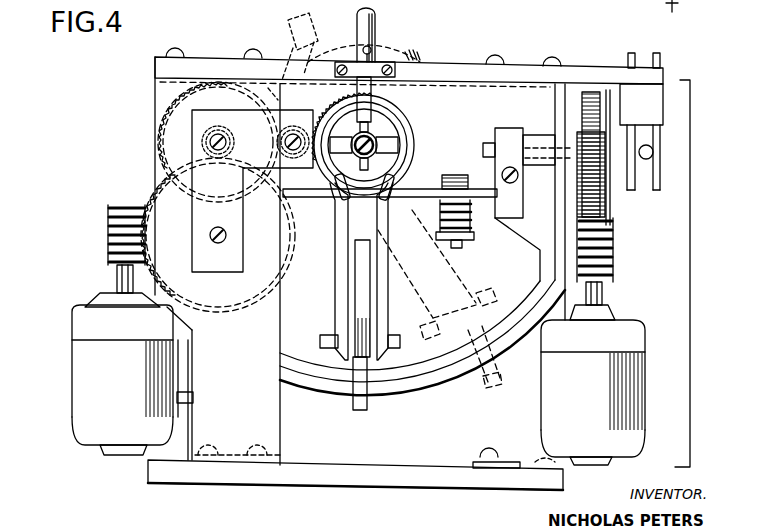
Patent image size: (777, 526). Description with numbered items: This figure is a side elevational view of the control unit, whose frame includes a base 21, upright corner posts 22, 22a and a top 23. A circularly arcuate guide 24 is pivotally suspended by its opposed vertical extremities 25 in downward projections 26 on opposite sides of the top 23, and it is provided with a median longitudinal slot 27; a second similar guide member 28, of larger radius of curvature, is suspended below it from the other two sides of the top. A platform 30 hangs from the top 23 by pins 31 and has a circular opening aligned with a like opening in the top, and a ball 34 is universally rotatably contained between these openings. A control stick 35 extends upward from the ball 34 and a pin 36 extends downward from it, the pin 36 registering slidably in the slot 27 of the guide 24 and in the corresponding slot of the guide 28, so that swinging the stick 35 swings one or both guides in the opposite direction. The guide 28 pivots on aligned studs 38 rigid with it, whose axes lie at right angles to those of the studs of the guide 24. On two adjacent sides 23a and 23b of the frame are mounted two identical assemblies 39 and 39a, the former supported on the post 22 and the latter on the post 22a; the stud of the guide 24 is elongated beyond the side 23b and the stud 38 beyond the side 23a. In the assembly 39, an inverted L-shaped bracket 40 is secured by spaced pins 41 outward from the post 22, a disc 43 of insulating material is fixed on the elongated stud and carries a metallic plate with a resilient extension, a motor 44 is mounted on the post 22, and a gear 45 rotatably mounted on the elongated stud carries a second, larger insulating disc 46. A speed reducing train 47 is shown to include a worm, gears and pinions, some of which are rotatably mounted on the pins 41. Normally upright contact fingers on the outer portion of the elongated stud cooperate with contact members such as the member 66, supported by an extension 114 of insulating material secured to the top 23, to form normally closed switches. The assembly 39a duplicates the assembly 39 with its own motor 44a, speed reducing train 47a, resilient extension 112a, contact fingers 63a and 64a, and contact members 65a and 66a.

The base 21 is at (320, 481).
The corner post 22 is at (270, 430).
The corner post 22a is at (578, 292).
The top 23 is at (155, 70).
The side of frame 23a is at (568, 489).
The side of frame 23b is at (415, 481).
The circularly arcuate guide 24 is at (335, 307).
The opposed vertical extremities 25 is at (512, 137).
The downward projections 26 is at (407, 86).
The median longitudinal slot 27 is at (367, 327).
The second guide member 28 is at (448, 378).
The platform 30 is at (473, 237).
The pins 31 is at (460, 249).
The ball 34 is at (402, 55).
The control stick 35 is at (358, 20).
The pin 36 is at (368, 408).
The studs 38 is at (534, 165).
The assembly 39 is at (288, 20).
The assembly 39a is at (692, 270).
The inverted L-shaped bracket 40 is at (206, 271).
The spaced pins 41 is at (218, 227).
The disc of insulating material 43 is at (334, 171).
The motor 44 is at (77, 376).
The motor 44a is at (547, 396).
The gear 45 is at (322, 84).
The second disc of insulating material 46 is at (408, 111).
The speed reducing train 47 is at (124, 190).
The speed reducing train 47a is at (626, 216).
The contact finger 63a is at (627, 194).
The contact finger 64a is at (648, 186).
The contact member 65a is at (633, 56).
The contact member 66 is at (371, 48).
The contact member 66a is at (659, 58).
The resilient extension 112a is at (617, 110).
The extension of insulating material 114 is at (355, 66).